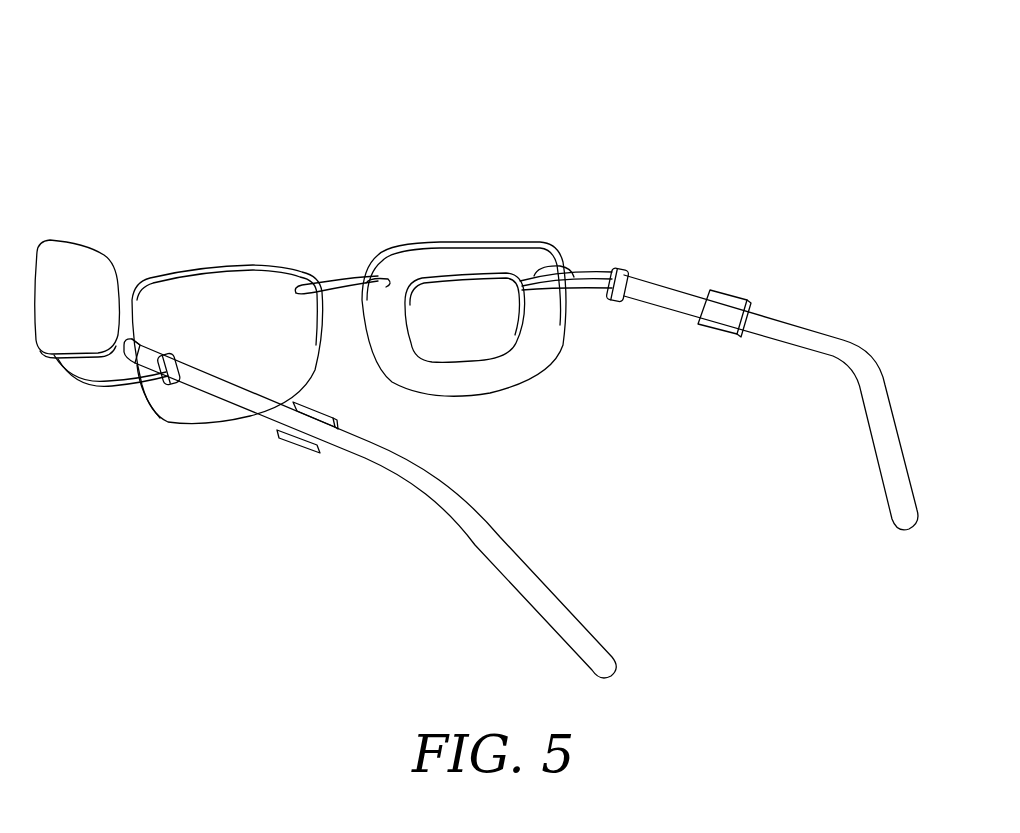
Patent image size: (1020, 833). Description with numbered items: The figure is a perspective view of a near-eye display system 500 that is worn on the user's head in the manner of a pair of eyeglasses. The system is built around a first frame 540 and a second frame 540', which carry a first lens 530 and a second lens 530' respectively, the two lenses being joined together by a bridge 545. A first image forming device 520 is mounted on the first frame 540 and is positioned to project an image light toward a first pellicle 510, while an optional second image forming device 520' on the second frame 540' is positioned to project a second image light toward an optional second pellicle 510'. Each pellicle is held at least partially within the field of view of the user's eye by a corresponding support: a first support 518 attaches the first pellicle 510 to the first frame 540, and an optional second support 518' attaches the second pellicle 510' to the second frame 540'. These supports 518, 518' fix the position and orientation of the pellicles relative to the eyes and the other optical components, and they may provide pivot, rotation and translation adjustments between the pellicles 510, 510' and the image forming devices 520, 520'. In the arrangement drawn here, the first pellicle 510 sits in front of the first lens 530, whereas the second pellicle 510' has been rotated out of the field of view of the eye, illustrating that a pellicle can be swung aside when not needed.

The near-eye display system 500 is at (228, 99).
The first pellicle 510 is at (496, 349).
The second pellicle 510' is at (101, 275).
The first support 518 is at (585, 250).
The second support 518' is at (151, 415).
The first image forming device 520 is at (752, 289).
The second image forming device 520' is at (293, 457).
The first lens 530 is at (464, 288).
The second lens 530' is at (227, 312).
The first frame 540 is at (771, 376).
The second frame 540' is at (370, 508).
The bridge 545 is at (345, 272).